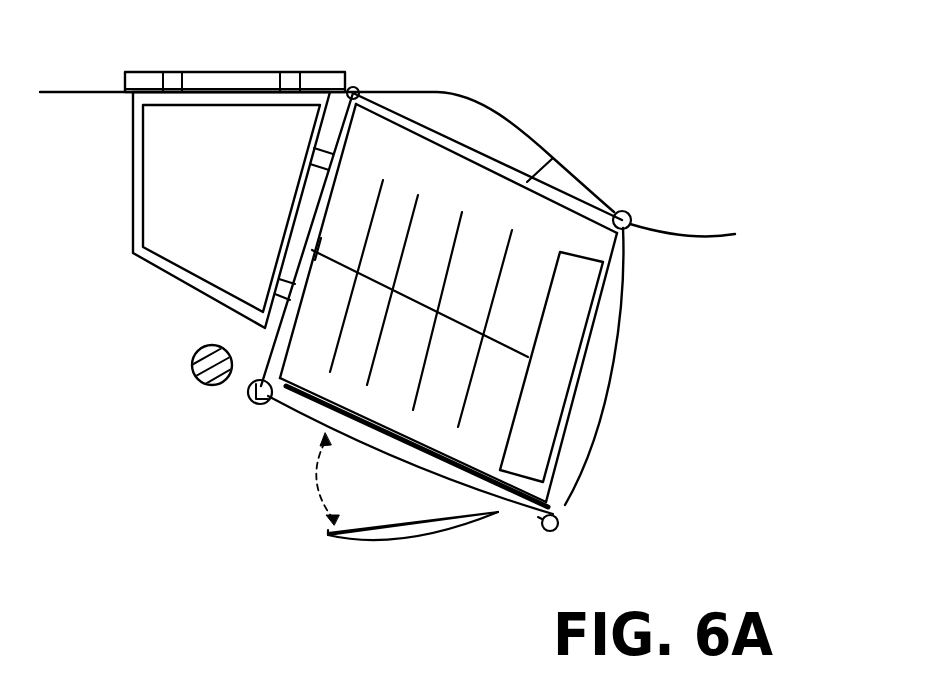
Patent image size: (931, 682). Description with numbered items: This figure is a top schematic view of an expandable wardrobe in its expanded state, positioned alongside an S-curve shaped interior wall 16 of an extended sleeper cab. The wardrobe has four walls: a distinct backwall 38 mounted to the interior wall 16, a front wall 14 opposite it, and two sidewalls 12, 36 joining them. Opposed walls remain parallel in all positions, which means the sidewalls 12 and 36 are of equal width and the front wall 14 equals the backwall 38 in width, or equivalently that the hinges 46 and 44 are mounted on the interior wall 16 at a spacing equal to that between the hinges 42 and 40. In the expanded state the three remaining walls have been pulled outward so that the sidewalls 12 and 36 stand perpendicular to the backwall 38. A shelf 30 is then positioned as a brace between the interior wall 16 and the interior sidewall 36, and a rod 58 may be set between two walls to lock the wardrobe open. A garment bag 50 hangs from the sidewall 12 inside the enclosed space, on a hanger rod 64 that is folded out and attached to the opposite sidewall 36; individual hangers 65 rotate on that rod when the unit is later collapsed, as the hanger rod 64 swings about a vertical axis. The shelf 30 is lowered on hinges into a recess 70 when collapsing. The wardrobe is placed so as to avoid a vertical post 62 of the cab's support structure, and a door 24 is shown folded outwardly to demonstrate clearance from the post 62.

The sidewall 12 is at (573, 482).
The front wall 14 is at (538, 517).
The interior wall 16 is at (492, 122).
The door 24 is at (417, 543).
The shelf 30 is at (180, 197).
The sidewall 36 is at (337, 173).
The backwall 38 is at (533, 172).
The hinge 40 is at (558, 522).
The hinge 42 is at (250, 398).
The hinge 44 is at (630, 213).
The hinge 46 is at (358, 88).
The garment bag 50 is at (553, 347).
The rod 58 is at (440, 450).
The vertical post 62 is at (192, 368).
The hanger rod 64 is at (463, 313).
The hangers 65 is at (408, 238).
The recess 70 is at (197, 72).